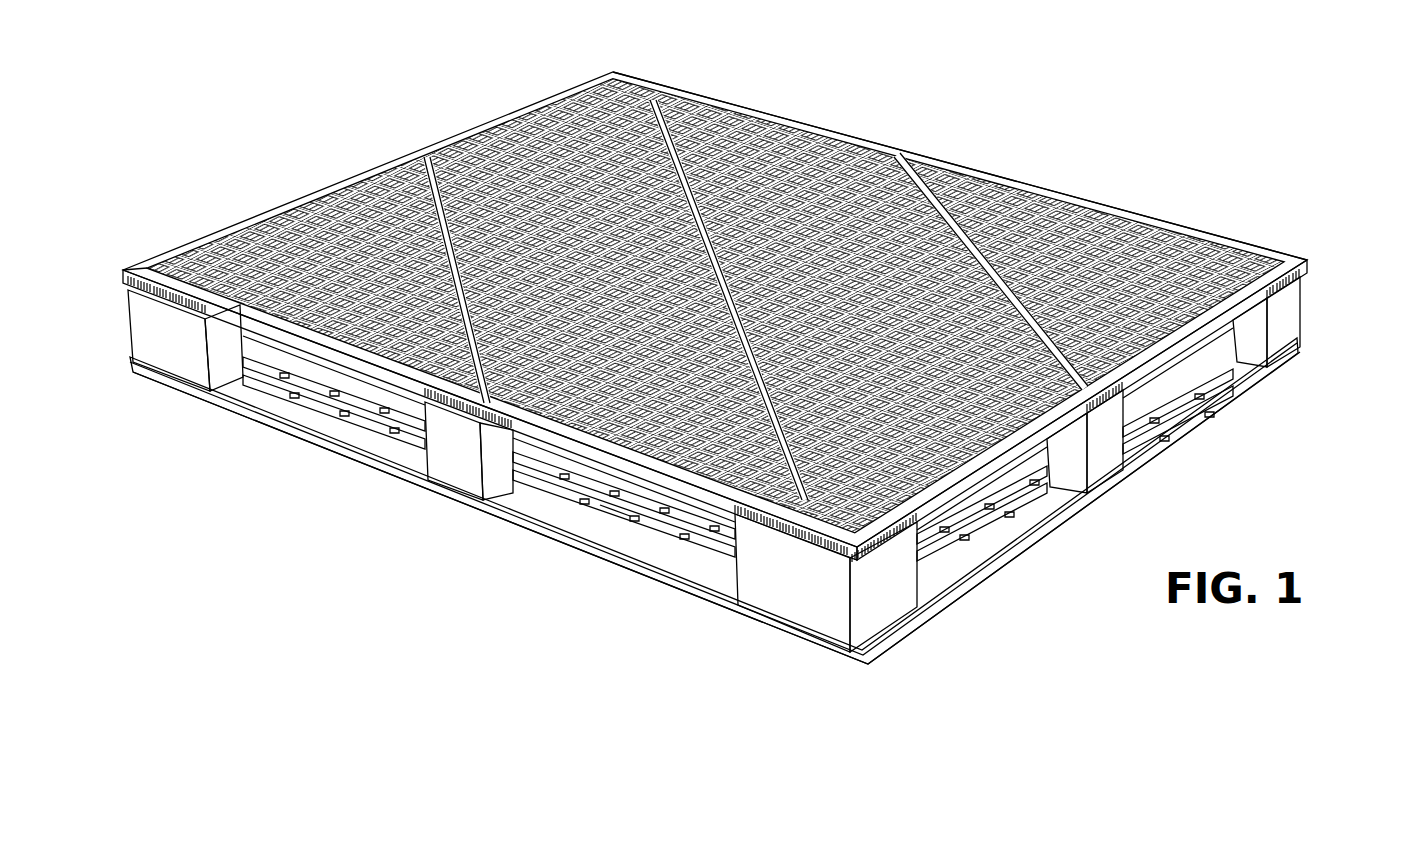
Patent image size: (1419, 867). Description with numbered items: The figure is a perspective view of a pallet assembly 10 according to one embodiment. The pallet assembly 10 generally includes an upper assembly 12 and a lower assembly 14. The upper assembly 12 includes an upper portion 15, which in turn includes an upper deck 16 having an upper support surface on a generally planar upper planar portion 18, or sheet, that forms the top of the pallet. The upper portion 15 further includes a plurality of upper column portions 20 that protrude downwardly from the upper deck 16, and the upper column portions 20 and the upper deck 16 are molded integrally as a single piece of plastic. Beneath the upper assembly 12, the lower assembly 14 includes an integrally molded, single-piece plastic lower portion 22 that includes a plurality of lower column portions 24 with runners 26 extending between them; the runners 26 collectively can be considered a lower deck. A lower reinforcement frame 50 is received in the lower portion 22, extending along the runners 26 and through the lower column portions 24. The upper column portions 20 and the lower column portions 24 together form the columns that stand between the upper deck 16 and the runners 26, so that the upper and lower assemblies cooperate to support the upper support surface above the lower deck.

The pallet assembly 10 is at (1028, 64).
The upper assembly 12 is at (1310, 262).
The lower assembly 14 is at (1300, 316).
The upper portion 15 is at (152, 258).
The upper deck 16 is at (993, 165).
The upper planar portion 18 is at (872, 150).
The upper column portions 20 is at (1243, 372).
The lower portion 22 is at (823, 653).
The lower column portions 24 is at (1287, 337).
The runners 26 is at (1267, 387).
The lower reinforcement frame 50 is at (613, 522).